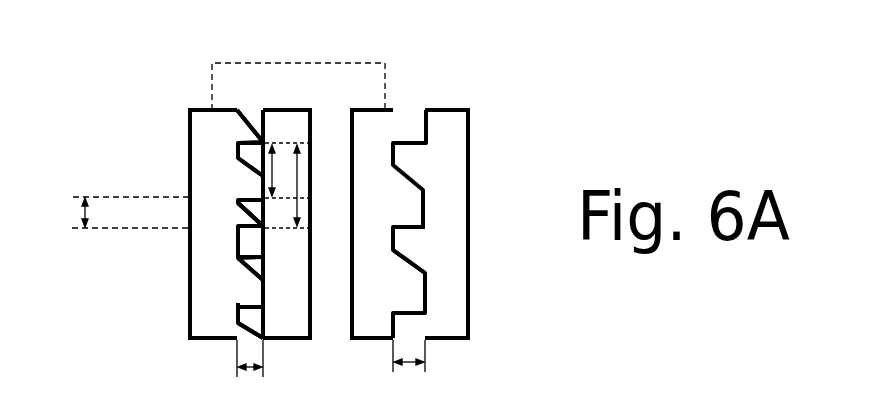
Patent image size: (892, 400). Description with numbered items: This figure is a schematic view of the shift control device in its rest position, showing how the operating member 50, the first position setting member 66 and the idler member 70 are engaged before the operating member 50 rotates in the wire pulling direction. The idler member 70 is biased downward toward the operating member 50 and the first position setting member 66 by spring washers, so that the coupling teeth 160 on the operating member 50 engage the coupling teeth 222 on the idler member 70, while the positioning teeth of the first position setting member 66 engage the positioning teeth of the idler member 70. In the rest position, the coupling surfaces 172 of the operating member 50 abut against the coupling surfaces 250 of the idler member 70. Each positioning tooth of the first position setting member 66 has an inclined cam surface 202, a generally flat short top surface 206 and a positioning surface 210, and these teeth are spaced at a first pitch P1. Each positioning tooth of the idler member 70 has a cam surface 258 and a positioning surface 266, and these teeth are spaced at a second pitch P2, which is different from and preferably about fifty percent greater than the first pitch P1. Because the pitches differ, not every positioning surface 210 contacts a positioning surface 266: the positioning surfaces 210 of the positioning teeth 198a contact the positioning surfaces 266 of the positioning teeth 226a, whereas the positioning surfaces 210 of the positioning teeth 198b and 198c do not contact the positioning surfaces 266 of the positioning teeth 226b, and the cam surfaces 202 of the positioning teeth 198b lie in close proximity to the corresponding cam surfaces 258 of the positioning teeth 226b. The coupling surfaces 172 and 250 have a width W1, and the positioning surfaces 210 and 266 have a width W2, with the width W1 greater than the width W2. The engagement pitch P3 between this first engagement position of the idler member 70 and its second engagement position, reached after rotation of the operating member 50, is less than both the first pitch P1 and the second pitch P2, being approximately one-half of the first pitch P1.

The operating member 50 is at (472, 110).
The first position setting member 66 is at (310, 113).
The idler member 70 is at (297, 63).
The coupling teeth 160 is at (412, 157).
The coupling surface 172 is at (421, 216).
The positioning tooth 198a is at (240, 167).
The positioning tooth 198b is at (258, 183).
The positioning tooth 198c is at (247, 258).
The cam surface 202 is at (254, 212).
The top surface 206 is at (237, 315).
The positioning surface 210 is at (263, 140).
The coupling teeth 222 is at (402, 201).
The positioning tooth 226a is at (251, 130).
The positioning tooth 226b is at (240, 222).
The coupling surface 250 is at (409, 262).
The cam surface 258 is at (240, 217).
The positioning surface 266 is at (238, 152).
The first pitch P1 is at (287, 170).
The second pitch P2 is at (287, 186).
The engagement pitch P3 is at (82, 213).
The width W1 is at (410, 366).
The width W2 is at (250, 371).